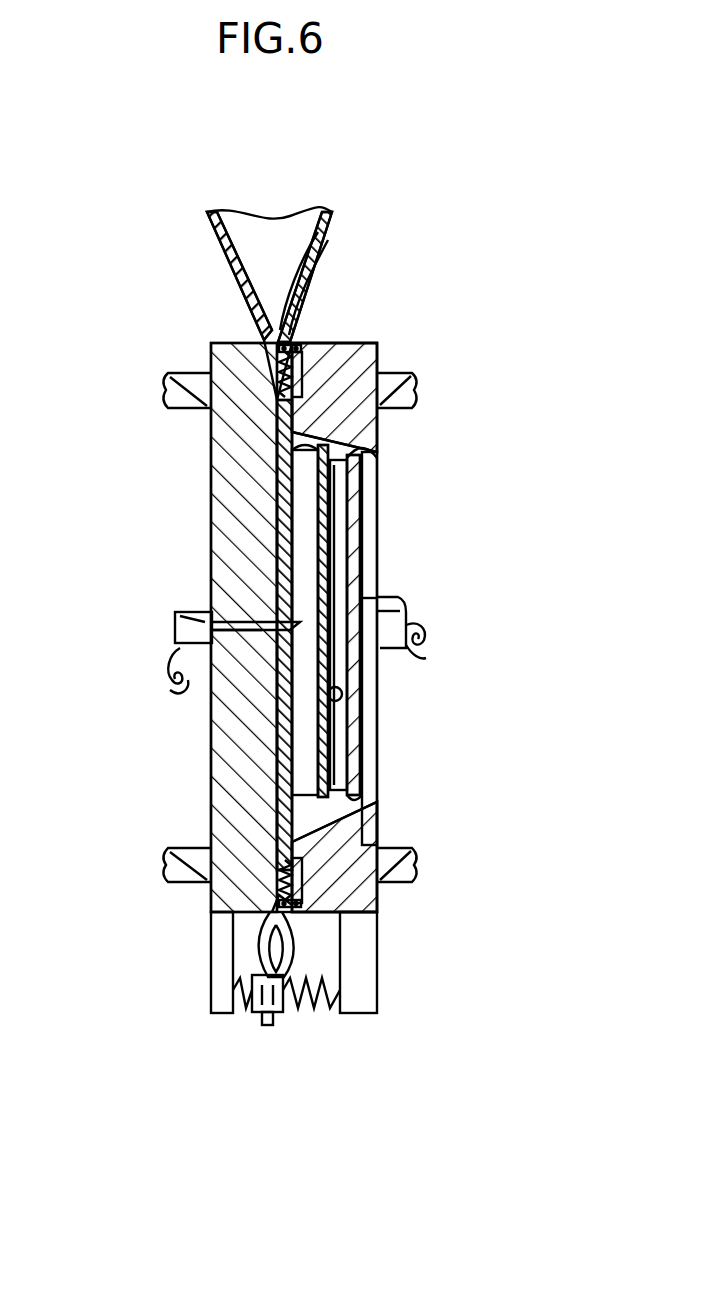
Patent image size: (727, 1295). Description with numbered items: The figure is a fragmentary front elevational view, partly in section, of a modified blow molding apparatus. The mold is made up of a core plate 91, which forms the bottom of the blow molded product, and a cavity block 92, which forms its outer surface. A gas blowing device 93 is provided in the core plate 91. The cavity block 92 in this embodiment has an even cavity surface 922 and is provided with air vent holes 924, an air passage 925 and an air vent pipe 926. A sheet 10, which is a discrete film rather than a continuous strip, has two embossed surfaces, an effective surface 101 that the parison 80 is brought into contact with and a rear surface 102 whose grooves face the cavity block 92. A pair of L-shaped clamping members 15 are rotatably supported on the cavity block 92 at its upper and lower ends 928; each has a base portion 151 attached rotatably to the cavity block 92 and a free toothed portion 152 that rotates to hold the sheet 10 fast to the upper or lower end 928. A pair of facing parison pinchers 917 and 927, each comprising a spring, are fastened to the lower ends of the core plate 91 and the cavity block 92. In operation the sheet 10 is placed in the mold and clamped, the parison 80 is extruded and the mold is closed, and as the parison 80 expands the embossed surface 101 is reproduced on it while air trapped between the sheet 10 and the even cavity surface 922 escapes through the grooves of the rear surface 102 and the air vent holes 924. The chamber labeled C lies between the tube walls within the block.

The parison 80 is at (333, 215).
The L-shaped clamping member 15 is at (240, 343).
The base portion 151 is at (290, 343).
The upper or lower end of the cavity block 928 is at (320, 348).
The core plate 91 is at (211, 345).
The cavity block 92 is at (380, 353).
The free toothed portion 152 is at (302, 392).
The sheet 10 is at (322, 448).
The effective embossed surface 101 is at (325, 520).
The rear surface 102 is at (362, 478).
The air vent holes 924 is at (350, 548).
The gas blowing device 93 is at (175, 614).
The air passage 925 is at (380, 598).
The air vent pipe 926 is at (428, 640).
The even cavity surface 922 is at (342, 694).
The chamber C is at (360, 762).
The parison pincher 927 is at (283, 1013).
The parison pincher 917 is at (252, 1012).